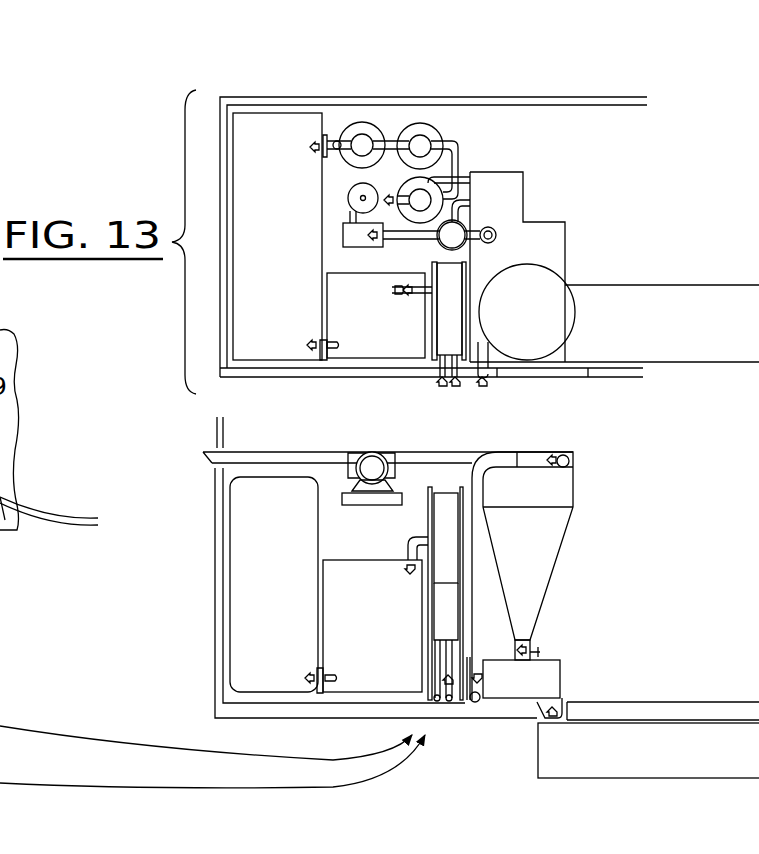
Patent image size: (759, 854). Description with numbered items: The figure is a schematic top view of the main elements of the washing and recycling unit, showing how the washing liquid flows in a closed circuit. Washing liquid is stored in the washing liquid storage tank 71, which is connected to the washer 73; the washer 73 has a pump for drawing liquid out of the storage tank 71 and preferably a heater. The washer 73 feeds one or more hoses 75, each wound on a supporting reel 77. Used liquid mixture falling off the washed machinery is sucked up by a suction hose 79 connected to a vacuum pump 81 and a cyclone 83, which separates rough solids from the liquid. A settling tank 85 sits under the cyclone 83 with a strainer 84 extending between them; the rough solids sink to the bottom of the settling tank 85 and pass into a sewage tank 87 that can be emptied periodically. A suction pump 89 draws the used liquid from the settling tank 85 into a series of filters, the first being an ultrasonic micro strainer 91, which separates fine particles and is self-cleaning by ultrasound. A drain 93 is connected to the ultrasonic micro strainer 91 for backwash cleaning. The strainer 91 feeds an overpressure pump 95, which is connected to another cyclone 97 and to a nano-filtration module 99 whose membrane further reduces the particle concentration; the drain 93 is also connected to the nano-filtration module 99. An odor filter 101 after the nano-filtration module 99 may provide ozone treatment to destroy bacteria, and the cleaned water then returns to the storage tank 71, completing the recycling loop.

The washing liquid storage tank 71 is at (295, 278).
The washer 73 is at (388, 634).
The hose 75 is at (0, 698).
The supporting reel 77 is at (440, 510).
The suction hose 79 is at (55, 512).
The vacuum pump 81 is at (391, 453).
The cyclone 83 is at (543, 328).
The strainer 84 is at (531, 640).
The settling tank 85 is at (560, 682).
The sewage tank 87 is at (673, 772).
The suction pump 89 is at (502, 226).
The ultrasonic micro strainer 91 is at (471, 248).
The drain 93 is at (516, 204).
The overpressure pump 95 is at (344, 250).
The cyclone 97 is at (348, 206).
The nano-filtration module 99 is at (392, 176).
The odor filter 101 is at (430, 122).